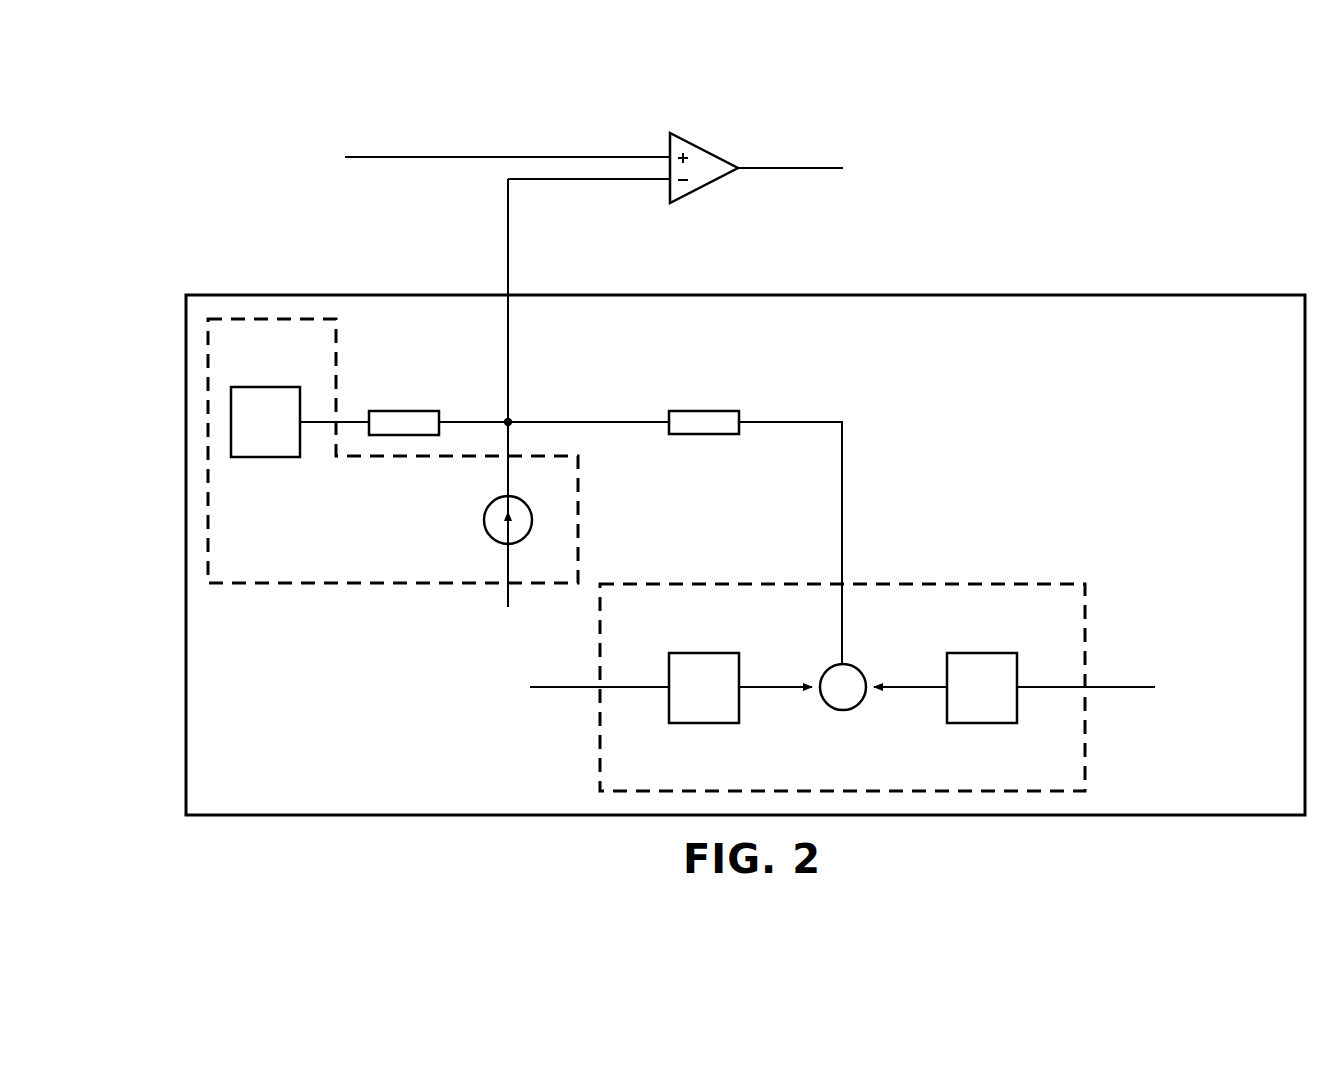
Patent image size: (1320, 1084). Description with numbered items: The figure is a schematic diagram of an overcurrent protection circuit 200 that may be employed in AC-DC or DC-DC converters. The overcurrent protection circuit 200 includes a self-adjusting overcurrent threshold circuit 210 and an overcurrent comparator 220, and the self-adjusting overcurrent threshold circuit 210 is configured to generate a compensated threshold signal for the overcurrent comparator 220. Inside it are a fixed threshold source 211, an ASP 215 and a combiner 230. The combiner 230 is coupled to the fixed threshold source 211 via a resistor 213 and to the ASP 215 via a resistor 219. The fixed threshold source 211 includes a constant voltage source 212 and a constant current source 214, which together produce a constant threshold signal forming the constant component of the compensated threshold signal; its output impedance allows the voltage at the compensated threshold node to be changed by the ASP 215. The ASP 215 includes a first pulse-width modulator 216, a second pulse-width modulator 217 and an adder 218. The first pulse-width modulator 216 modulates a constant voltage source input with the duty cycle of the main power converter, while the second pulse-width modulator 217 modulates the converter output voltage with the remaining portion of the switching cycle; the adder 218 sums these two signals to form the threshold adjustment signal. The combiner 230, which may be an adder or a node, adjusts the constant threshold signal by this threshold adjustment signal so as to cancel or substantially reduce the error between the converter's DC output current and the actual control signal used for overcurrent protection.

The overcurrent protection circuit 200 is at (1122, 119).
The self-adjusting overcurrent threshold circuit 210 is at (178, 404).
The fixed threshold source 211 is at (320, 592).
The constant voltage source 212 is at (265, 387).
The resistor R213 213 is at (403, 411).
The constant current source 214 is at (483, 520).
The ASP 215 is at (1094, 761).
The first pulse-width modulator 216 is at (704, 723).
The second pulse-width modulator 217 is at (982, 723).
The adder 218 is at (855, 710).
The resistor R219 219 is at (703, 411).
The overcurrent comparator 220 is at (706, 148).
The combiner 230 is at (502, 418).